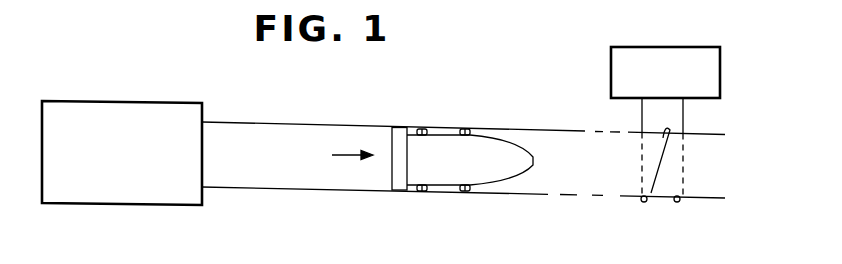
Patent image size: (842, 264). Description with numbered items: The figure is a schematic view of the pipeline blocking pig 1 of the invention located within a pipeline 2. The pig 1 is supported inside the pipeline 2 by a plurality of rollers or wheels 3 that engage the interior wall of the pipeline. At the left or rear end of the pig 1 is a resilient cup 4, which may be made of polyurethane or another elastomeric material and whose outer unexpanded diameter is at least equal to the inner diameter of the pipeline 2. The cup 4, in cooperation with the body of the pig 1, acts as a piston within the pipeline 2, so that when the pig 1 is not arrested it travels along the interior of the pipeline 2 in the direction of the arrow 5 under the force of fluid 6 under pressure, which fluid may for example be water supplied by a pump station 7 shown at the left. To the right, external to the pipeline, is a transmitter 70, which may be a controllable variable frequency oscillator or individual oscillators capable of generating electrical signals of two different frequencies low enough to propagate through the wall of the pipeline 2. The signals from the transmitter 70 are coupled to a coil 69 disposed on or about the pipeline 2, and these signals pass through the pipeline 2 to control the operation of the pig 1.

The pig 1 is at (492, 147).
The pipeline 2 is at (545, 130).
The rollers or wheels 3 is at (422, 128).
The resilient cup 4 is at (401, 135).
The arrow 5 is at (347, 152).
The fluid 6 is at (312, 138).
The pump station 7 is at (156, 107).
The coil 69 is at (657, 190).
The transmitter 70 is at (611, 72).